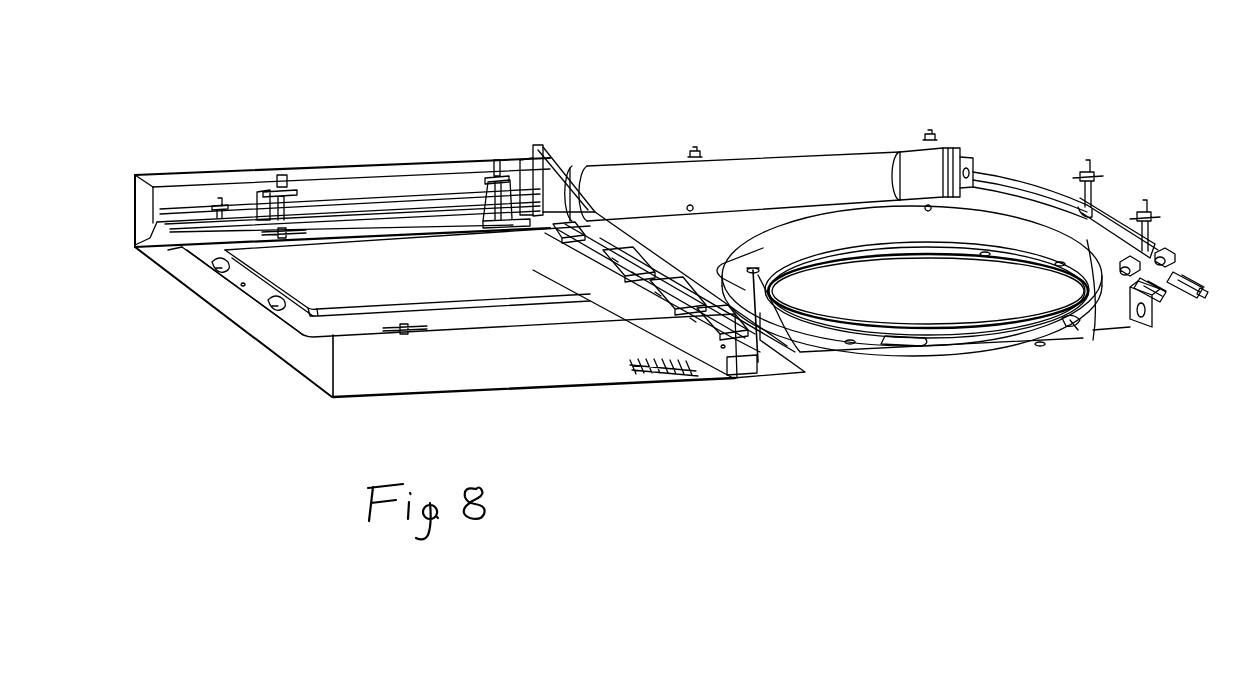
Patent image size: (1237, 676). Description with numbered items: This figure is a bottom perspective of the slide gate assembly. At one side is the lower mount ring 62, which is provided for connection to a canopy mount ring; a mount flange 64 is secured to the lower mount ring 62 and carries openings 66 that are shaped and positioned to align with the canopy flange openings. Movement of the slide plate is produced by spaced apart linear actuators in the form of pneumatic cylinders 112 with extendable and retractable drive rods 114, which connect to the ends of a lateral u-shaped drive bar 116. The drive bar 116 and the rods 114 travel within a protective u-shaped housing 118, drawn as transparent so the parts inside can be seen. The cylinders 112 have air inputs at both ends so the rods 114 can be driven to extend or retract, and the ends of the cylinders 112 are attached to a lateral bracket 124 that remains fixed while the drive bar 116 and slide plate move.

The lower mount ring 62 is at (1090, 300).
The mount flange 64 is at (1120, 320).
The openings 66 is at (753, 278).
The cylinders 112 is at (803, 158).
The drive rods 114 is at (525, 158).
The drive bar 116 is at (503, 158).
The housing 118 is at (415, 380).
The lateral bracket 124 is at (598, 237).